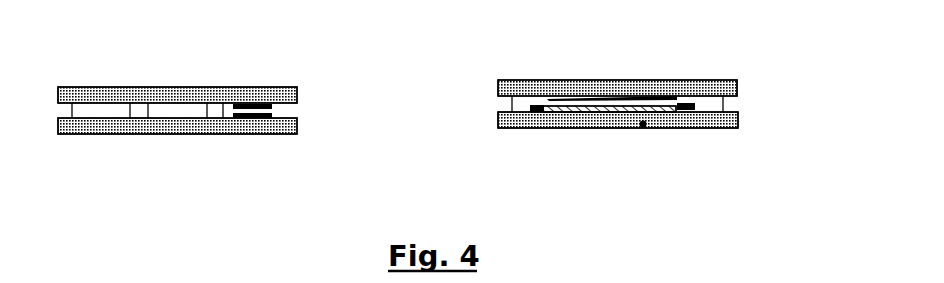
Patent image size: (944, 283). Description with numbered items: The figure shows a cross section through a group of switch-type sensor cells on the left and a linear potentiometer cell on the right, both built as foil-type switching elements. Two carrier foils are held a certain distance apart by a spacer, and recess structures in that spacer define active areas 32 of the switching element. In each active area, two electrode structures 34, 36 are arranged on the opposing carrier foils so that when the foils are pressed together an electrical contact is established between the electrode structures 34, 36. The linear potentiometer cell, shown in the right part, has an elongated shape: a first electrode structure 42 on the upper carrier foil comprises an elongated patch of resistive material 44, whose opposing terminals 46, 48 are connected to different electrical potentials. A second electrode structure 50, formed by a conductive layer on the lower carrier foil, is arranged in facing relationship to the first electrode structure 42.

The active areas 32 is at (172, 118).
The electrode structure 34 is at (242, 118).
The electrode structure 36 is at (252, 101).
The first electrode structure 42 is at (643, 124).
The elongated patch of resistive material 44 is at (612, 110).
The terminal 46 is at (536, 112).
The terminal 48 is at (688, 110).
The second electrode structure 50 is at (635, 92).